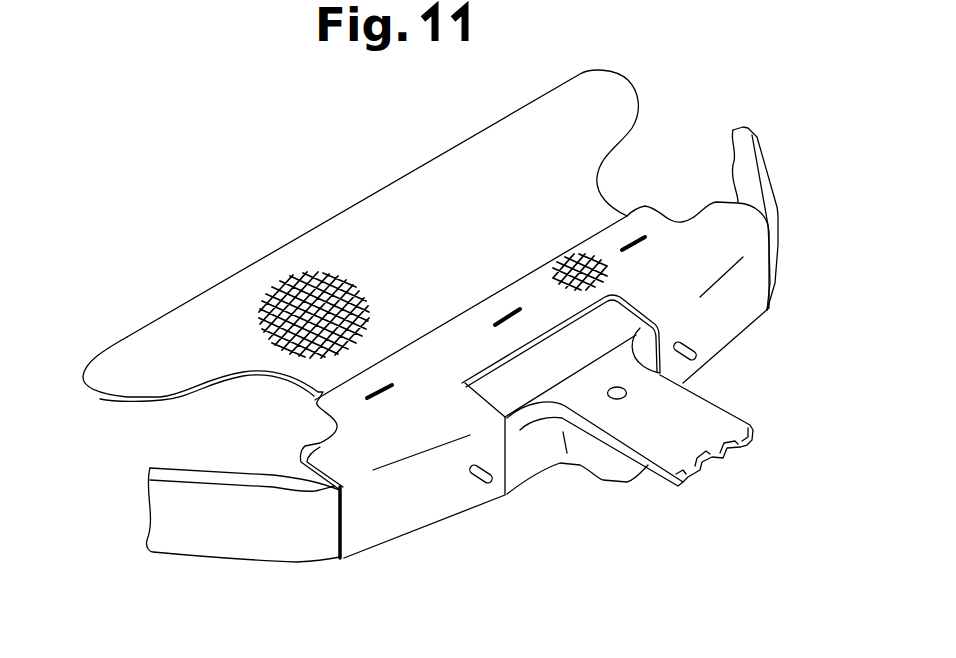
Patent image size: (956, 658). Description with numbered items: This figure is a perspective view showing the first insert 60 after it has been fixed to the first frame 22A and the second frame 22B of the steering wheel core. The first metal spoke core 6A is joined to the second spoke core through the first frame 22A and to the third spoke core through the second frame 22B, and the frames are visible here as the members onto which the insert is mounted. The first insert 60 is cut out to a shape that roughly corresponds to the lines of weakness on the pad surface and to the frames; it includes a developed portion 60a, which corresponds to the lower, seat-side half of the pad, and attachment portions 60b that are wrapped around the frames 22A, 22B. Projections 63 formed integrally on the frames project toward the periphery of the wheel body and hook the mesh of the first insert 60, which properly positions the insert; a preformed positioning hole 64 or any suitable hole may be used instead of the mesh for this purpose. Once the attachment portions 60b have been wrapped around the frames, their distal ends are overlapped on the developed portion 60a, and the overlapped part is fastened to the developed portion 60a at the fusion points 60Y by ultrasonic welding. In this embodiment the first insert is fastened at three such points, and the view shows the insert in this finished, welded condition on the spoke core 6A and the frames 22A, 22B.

The first insert 60 is at (623, 78).
The developed portion 60a is at (370, 205).
The attachment portions 60b is at (327, 435).
The fusion points 60Y is at (390, 391).
The projections 63 is at (492, 483).
The positioning hole 64 is at (472, 481).
The first metal spoke core 6A is at (672, 453).
The first frame 22A is at (230, 541).
The second frame 22B is at (779, 258).